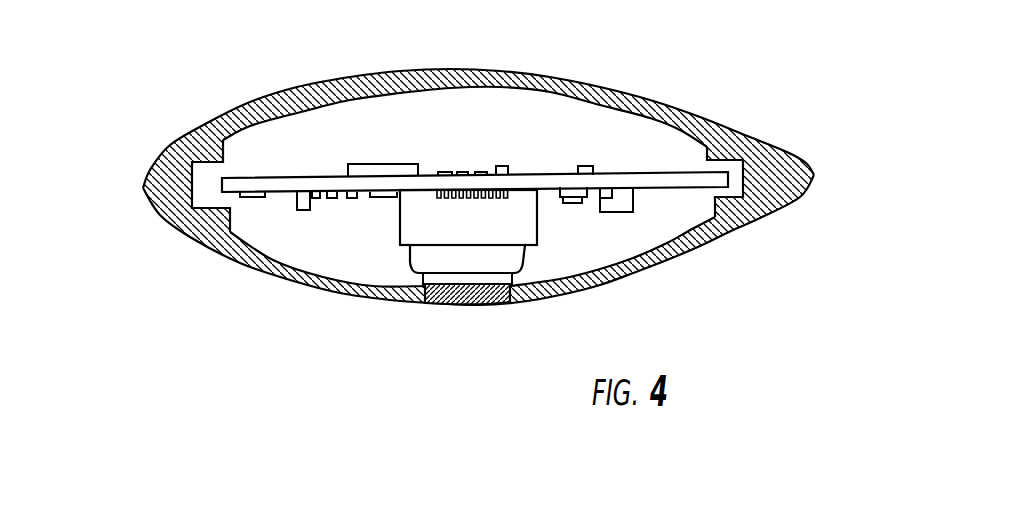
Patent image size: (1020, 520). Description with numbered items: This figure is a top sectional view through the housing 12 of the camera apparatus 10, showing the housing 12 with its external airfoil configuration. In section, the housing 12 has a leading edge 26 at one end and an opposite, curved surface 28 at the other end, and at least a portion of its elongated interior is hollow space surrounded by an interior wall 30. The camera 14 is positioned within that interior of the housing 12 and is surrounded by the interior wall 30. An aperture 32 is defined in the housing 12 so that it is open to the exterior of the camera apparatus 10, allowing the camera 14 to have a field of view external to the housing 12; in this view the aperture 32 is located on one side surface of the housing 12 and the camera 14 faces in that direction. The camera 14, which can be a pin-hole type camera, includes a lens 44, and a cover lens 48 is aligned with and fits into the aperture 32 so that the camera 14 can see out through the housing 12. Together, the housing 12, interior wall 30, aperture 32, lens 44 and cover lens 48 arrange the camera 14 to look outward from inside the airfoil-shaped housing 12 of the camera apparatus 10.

The camera apparatus 10 is at (192, 78).
The housing 12 is at (515, 76).
The camera 14 is at (348, 240).
The leading edge 26 is at (813, 174).
The curved surface 28 is at (147, 177).
The interior wall 30 is at (380, 93).
The aperture 32 is at (403, 298).
The lens 44 is at (492, 307).
The cover lens 48 is at (478, 304).